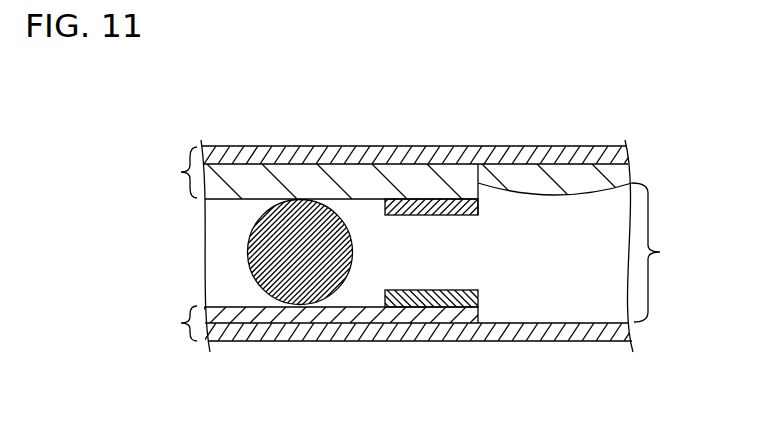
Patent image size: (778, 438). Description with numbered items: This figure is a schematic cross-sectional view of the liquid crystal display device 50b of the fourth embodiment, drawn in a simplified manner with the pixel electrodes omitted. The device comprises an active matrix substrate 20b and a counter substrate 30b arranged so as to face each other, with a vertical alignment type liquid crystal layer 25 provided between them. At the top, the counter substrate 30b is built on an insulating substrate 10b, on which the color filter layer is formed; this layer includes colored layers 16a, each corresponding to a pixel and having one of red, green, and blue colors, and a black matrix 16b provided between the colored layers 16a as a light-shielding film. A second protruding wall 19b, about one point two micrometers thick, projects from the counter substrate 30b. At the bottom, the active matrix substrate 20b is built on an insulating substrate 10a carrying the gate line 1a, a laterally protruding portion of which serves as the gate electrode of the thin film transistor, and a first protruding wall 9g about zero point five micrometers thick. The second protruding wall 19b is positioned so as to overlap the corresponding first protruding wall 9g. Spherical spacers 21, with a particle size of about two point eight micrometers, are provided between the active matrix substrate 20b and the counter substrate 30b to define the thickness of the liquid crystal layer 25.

The liquid crystal display device 50b is at (225, 106).
The insulating substrate 10b is at (620, 155).
The insulating substrate 10a is at (620, 333).
The counter substrate 30b is at (162, 172).
The active matrix substrate 20b is at (162, 323).
The black matrix 16b is at (400, 183).
The colored layer 16a is at (540, 176).
The second protruding wall 19b is at (478, 208).
The spacer 21 is at (250, 247).
The liquid crystal layer 25 is at (665, 252).
The first protruding wall 9g is at (478, 298).
The gate line 1a is at (478, 313).